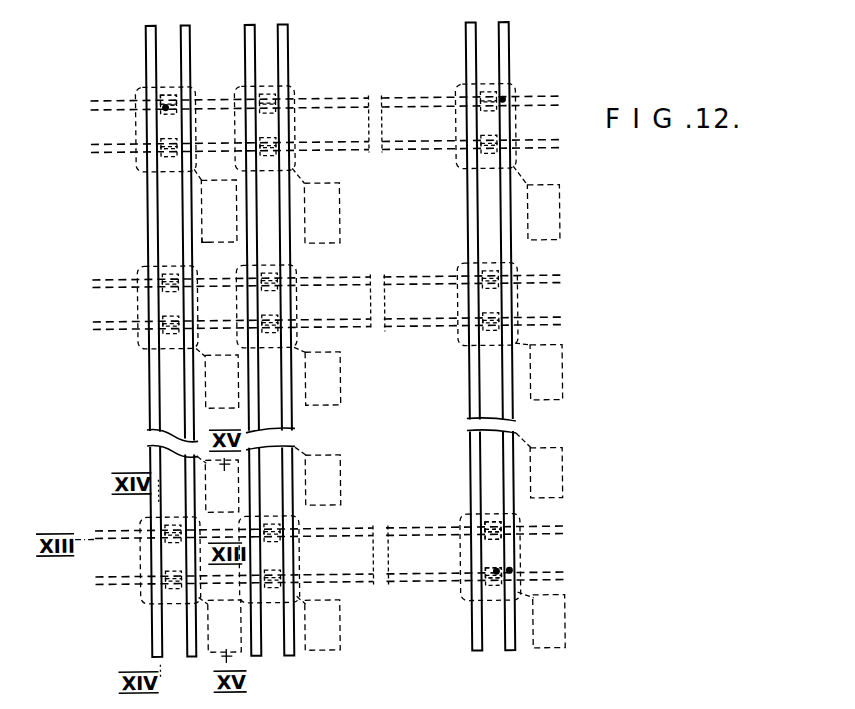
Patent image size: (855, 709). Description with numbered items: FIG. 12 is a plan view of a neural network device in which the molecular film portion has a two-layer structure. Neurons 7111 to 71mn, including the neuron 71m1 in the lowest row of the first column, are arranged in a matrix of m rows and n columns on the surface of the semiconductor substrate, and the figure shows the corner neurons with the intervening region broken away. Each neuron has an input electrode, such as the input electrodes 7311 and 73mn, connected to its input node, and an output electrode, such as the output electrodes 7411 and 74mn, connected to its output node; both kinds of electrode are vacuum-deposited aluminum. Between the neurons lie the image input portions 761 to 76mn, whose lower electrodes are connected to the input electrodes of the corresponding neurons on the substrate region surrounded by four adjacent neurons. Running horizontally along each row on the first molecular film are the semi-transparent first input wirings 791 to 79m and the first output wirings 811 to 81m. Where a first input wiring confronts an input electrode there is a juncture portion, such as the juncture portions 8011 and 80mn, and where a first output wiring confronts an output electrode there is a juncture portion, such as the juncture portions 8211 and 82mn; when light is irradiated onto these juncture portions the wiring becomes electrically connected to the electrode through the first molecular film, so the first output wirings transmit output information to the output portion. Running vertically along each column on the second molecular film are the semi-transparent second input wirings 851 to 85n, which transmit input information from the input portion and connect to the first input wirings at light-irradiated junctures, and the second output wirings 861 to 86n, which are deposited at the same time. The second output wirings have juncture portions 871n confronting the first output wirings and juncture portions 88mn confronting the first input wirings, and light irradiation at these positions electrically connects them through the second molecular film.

The neuron 7111 is at (170, 80).
The output electrode 7411 is at (170, 93).
The juncture portion 8211 is at (167, 105).
The input electrode 7311 is at (163, 140).
The juncture portion 8011 is at (165, 157).
The second input wiring 851 is at (152, 210).
The image input portion 761 is at (205, 238).
The second output wiring 861 is at (185, 378).
The first output wiring 811 is at (335, 97).
The juncture portion 871n is at (507, 100).
The second input wiring 85n is at (467, 202).
The first input wiring 791 is at (342, 150).
The second output wiring 86n is at (502, 363).
The output electrode 74mn is at (495, 525).
The input electrode 73mn is at (492, 565).
The first output wiring 81m is at (348, 523).
The neuron 71mn is at (527, 518).
The juncture portion 82mn is at (525, 533).
The juncture portion 88mn is at (508, 572).
The neuron 71m1 is at (147, 592).
The first input wiring 79m is at (422, 582).
The image input portion 76mn is at (565, 636).
The juncture portion 80mn is at (494, 577).